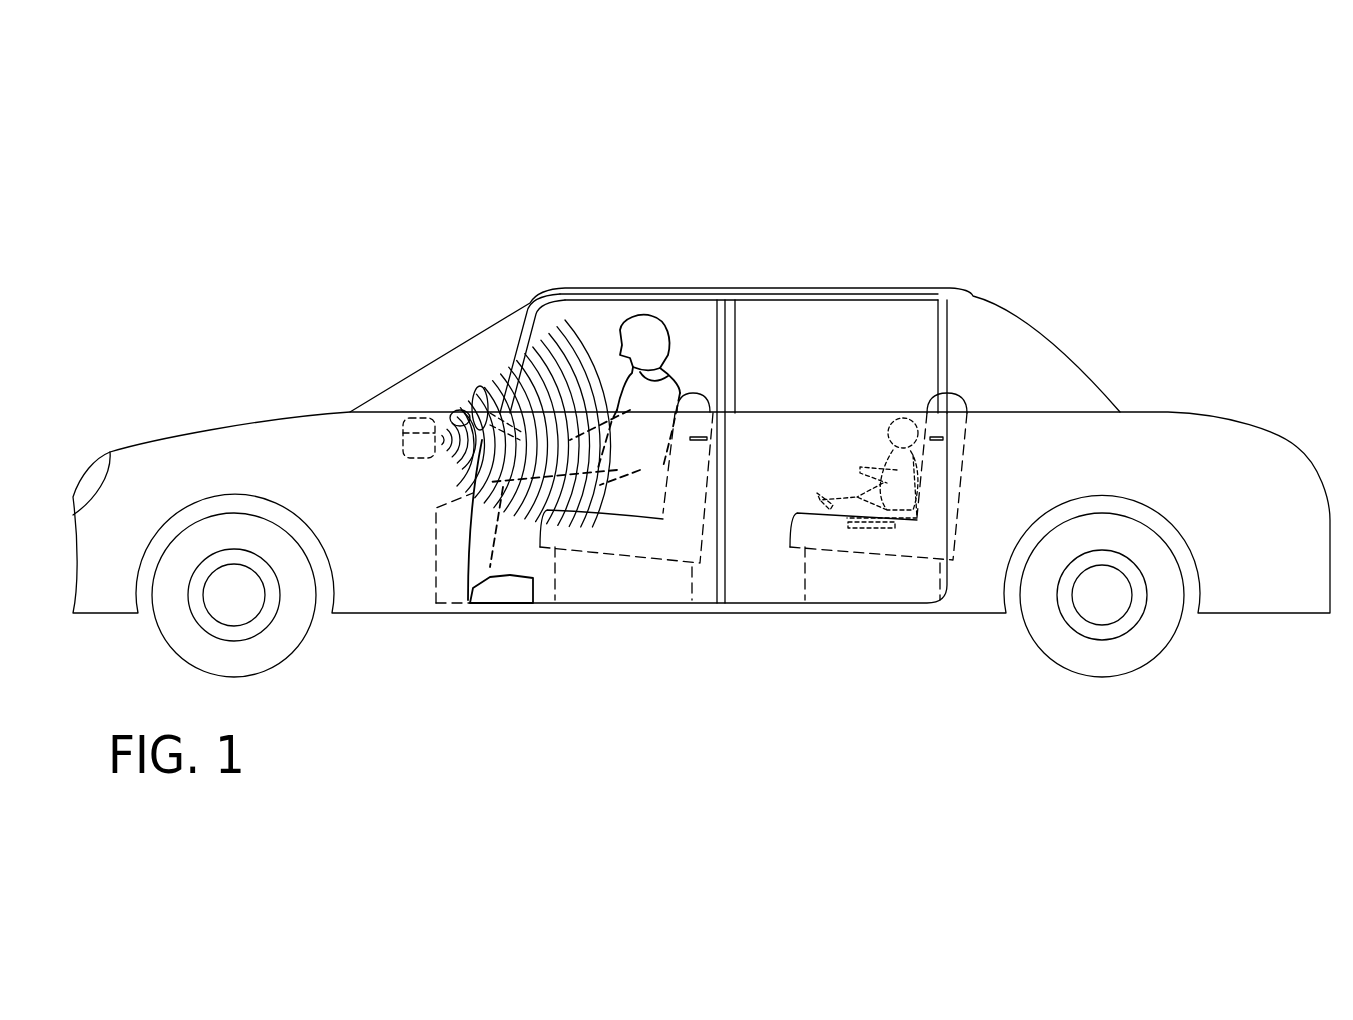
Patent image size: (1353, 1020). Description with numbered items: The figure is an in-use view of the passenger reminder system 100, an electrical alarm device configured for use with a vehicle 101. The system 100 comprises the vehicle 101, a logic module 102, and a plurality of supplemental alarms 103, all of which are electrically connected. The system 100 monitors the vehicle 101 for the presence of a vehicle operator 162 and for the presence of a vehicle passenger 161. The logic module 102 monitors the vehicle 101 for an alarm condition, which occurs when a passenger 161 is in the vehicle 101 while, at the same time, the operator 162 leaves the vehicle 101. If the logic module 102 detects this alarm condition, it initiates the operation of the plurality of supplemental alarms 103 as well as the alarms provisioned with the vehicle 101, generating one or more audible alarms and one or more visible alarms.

The passenger reminder system 100 is at (278, 200).
The vehicle 101 is at (1140, 433).
The logic module 102 is at (418, 422).
The plurality of supplemental alarms 103 is at (565, 355).
The passenger 161 is at (893, 467).
The operator 162 is at (668, 342).